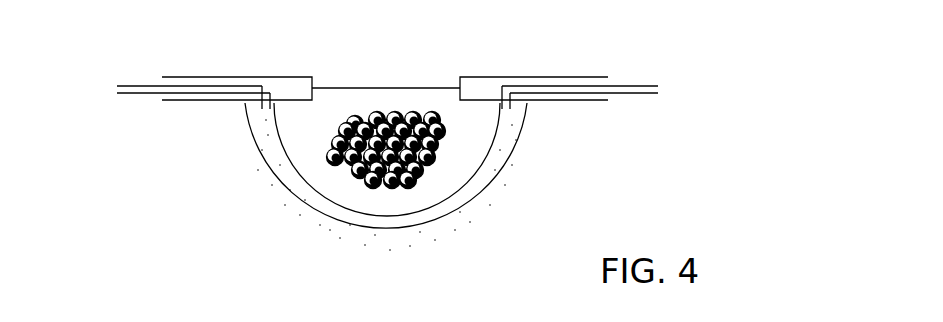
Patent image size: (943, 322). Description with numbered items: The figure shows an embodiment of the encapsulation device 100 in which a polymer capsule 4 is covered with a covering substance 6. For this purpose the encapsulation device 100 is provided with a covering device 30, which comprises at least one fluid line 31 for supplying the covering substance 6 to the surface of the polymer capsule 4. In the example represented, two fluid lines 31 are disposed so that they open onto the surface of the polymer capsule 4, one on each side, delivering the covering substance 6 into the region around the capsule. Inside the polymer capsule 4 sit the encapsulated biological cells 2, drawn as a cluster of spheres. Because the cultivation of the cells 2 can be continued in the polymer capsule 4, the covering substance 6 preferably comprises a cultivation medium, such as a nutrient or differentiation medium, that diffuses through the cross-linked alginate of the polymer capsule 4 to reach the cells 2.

The encapsulation device 100 is at (682, 85).
The covering device 30 is at (105, 75).
The fluid line 31 is at (238, 87).
The biological cells 2 is at (348, 158).
The polymer capsule 4 is at (477, 175).
The covering substance 6 is at (433, 225).